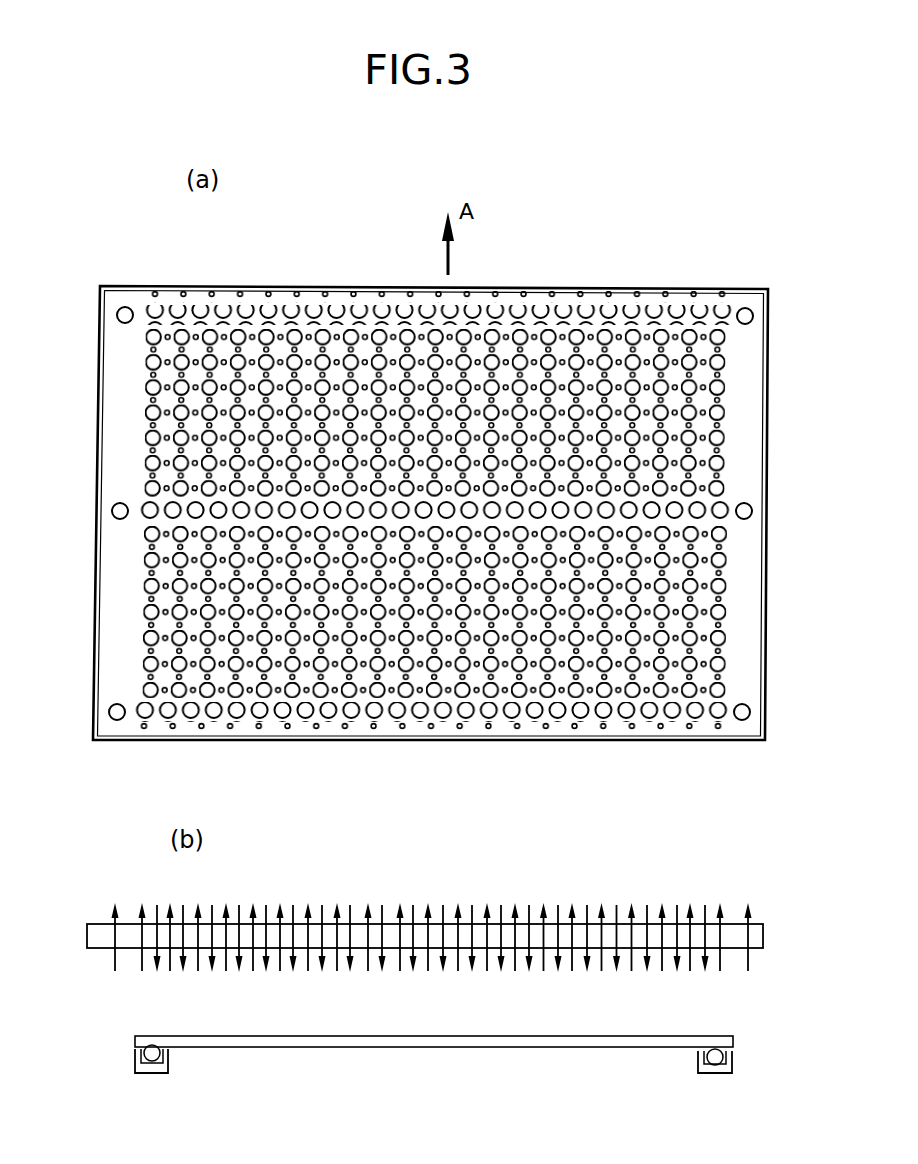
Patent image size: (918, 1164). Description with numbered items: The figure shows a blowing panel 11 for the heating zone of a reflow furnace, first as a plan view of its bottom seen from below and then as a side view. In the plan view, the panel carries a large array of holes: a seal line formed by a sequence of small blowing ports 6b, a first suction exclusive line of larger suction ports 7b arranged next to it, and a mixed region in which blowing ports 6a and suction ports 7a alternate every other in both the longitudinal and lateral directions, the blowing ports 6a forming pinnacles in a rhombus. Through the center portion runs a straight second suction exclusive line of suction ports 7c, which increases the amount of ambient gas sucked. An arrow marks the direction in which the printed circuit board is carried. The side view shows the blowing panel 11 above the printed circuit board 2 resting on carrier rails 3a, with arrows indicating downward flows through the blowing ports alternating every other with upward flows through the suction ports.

The blowing panel 11 is at (768, 622).
The suction port 7a is at (719, 695).
The blowing port 6a is at (704, 694).
The suction port 7b is at (700, 311).
The blowing port 6b is at (578, 295).
The suction port 7c is at (150, 508).
The printed circuit board 2 is at (725, 1036).
The carrier rail 3a is at (136, 1067).